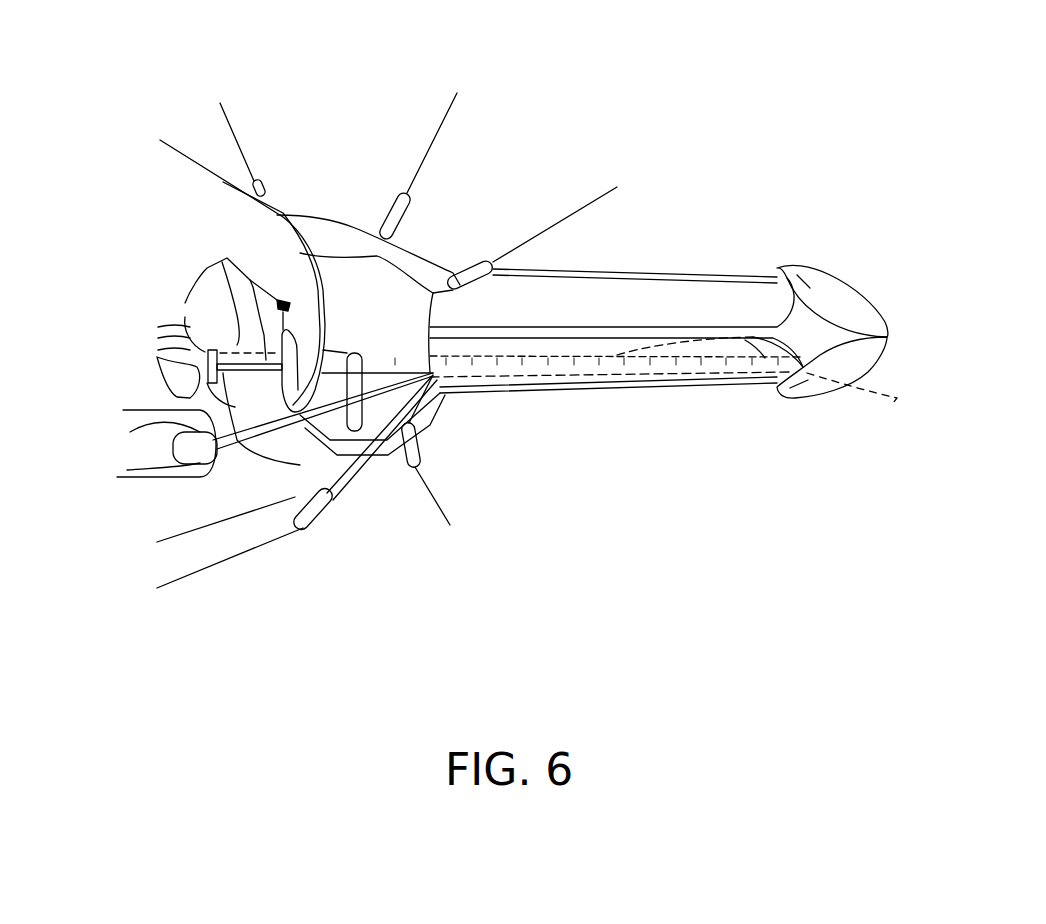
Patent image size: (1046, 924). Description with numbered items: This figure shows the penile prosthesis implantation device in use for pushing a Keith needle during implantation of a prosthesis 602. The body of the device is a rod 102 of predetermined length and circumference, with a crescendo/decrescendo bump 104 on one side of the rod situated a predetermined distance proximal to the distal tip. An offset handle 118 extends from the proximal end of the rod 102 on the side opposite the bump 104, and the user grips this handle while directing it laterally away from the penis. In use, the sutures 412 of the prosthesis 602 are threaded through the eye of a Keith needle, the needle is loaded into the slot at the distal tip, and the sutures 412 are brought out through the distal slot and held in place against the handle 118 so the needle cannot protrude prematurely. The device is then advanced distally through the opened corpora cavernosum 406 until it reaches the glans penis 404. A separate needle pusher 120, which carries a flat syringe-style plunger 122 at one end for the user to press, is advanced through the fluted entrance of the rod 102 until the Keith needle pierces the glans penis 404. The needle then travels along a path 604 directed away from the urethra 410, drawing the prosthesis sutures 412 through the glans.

The rod 102 is at (486, 390).
The bump 104 is at (711, 365).
The offset handle 118 is at (129, 391).
The needle pusher 120 is at (250, 372).
The flat syringe-style plunger 122 is at (211, 350).
The glans penis 404 is at (865, 271).
The corpora cavernosum 406 is at (674, 290).
The urethra 410 is at (583, 313).
The penile prosthesis sutures 412 is at (232, 460).
The prosthesis 602 is at (334, 537).
The path 604 is at (895, 366).